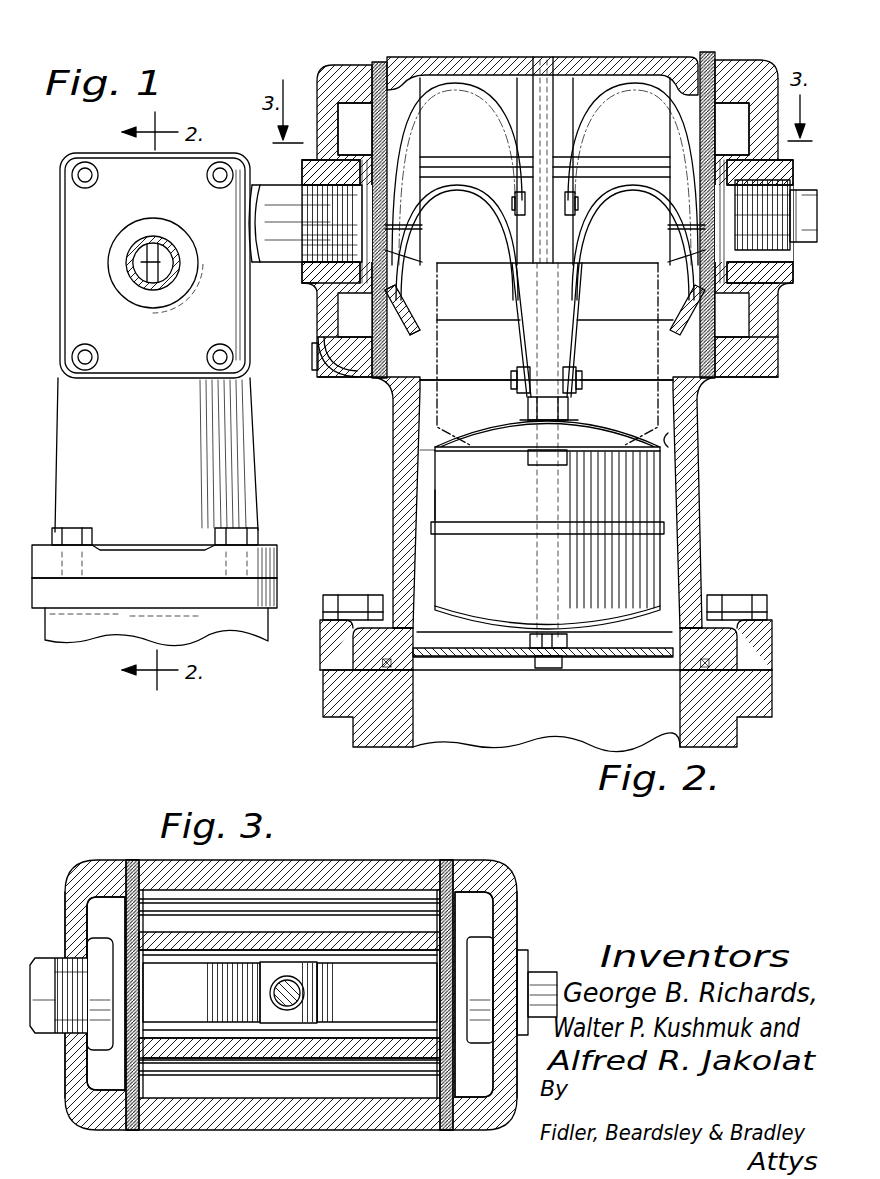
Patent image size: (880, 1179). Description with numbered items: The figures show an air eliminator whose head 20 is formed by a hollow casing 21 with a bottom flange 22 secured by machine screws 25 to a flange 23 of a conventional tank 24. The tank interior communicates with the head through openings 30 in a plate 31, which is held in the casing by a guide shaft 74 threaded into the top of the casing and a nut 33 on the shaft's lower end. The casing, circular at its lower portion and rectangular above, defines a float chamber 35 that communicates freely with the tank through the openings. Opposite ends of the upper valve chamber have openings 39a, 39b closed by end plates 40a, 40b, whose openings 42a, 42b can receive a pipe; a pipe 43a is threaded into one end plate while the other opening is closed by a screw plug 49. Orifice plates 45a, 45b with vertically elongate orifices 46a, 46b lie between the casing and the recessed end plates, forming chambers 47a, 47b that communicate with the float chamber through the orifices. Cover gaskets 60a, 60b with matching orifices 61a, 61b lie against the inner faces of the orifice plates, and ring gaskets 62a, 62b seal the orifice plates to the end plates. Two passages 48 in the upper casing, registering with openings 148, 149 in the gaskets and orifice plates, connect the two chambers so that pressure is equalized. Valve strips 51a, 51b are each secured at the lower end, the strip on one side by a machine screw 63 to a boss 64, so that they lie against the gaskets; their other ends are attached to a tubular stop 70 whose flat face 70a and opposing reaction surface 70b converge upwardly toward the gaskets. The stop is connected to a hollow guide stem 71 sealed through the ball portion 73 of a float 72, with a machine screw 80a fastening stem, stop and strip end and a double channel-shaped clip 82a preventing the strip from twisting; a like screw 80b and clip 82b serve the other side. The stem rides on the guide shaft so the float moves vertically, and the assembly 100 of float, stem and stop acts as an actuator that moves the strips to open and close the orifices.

In FIG. 1, the head 20 is at (250, 452).
In FIG. 2, the head 20 is at (703, 494).
In FIG. 3, the head 20 is at (279, 856).
In FIG. 1, the hollow casing 21 is at (153, 502).
In FIG. 2, the hollow casing 21 is at (698, 542).
In FIG. 1, the bottom flange 22 is at (150, 568).
In FIG. 2, the bottom flange 22 is at (740, 636).
In FIG. 1, the flange 23 is at (266, 597).
In FIG. 2, the flange 23 is at (758, 692).
In FIG. 1, the tank 24 is at (240, 622).
In FIG. 1, the machine screws 25 is at (246, 528).
In FIG. 2, the machine screws 25 is at (745, 594).
In FIG. 2, the openings 30 is at (652, 658).
In FIG. 2, the plate 31 is at (565, 660).
In FIG. 2, the nut 33 is at (538, 664).
In FIG. 2, the float chamber 35 is at (678, 441).
In FIG. 2, the opening 39a is at (345, 310).
In FIG. 2, the opening 39b is at (690, 136).
In FIG. 1, the end plate 40a is at (124, 368).
In FIG. 2, the end plate 40a is at (304, 160).
In FIG. 3, the end plate 40a is at (98, 870).
In FIG. 2, the end plate 40b is at (770, 300).
In FIG. 3, the end plate 40b is at (505, 922).
In FIG. 2, the opening 42a is at (318, 250).
In FIG. 2, the opening 42b is at (790, 272).
In FIG. 1, the pipe 43a is at (168, 288).
In FIG. 2, the pipe 43a is at (305, 219).
In FIG. 3, the pipe 43a is at (47, 955).
In FIG. 2, the orifice plate 45a is at (383, 60).
In FIG. 3, the orifice plate 45a is at (130, 858).
In FIG. 2, the orifice plate 45b is at (708, 52).
In FIG. 3, the orifice plate 45b is at (446, 995).
In FIG. 1, the orifice 46a is at (150, 262).
In FIG. 2, the orifice 46a is at (386, 232).
In FIG. 2, the orifice 46b is at (702, 208).
In FIG. 2, the chamber 47a is at (350, 118).
In FIG. 3, the chamber 47a is at (110, 1085).
In FIG. 2, the chamber 47b is at (735, 105).
In FIG. 3, the chamber 47b is at (490, 1090).
In FIG. 3, the passages 48 is at (350, 899).
In FIG. 2, the screw plug 49 is at (782, 194).
In FIG. 3, the screw plug 49 is at (538, 972).
In FIG. 2, the valve element or strip 51a is at (457, 242).
In FIG. 3, the valve element or strip 51a is at (195, 1012).
In FIG. 2, the valve element or strip 51b is at (633, 242).
In FIG. 3, the valve element or strip 51b is at (345, 1010).
In FIG. 2, the cover gasket 60a is at (398, 122).
In FIG. 2, the cover gasket 60b is at (698, 122).
In FIG. 2, the orifice 61a is at (388, 256).
In FIG. 2, the orifice 61b is at (702, 234).
In FIG. 2, the ring gasket 62a is at (366, 384).
In FIG. 2, the ring gasket 62b is at (732, 384).
In FIG. 2, the machine screw 63 is at (412, 328).
In FIG. 2, the boss 64 is at (400, 292).
In FIG. 2, the tubular stop 70 is at (575, 300).
In FIG. 3, the tubular stop 70 is at (284, 966).
In FIG. 2, the flat face 70a is at (519, 337).
In FIG. 3, the flat face 70a is at (258, 980).
In FIG. 2, the reaction surface 70b is at (580, 318).
In FIG. 3, the reaction surface 70b is at (320, 990).
In FIG. 2, the guide stem 71 is at (574, 410).
In FIG. 2, the float 72 is at (455, 480).
In FIG. 2, the ball portion 73 is at (455, 500).
In FIG. 2, the guide shaft 74 is at (560, 60).
In FIG. 3, the guide shaft 74 is at (305, 995).
In FIG. 2, the machine screw 80a is at (511, 383).
In FIG. 2, the bracket 80b is at (583, 376).
In FIG. 2, the double channel-shaped clip 82a is at (516, 368).
In FIG. 2, the contact 82b is at (578, 380).
In FIG. 2, the assembly 100 is at (547, 525).
In FIG. 3, the openings 148 is at (428, 880).
In FIG. 3, the openings 149 is at (442, 915).